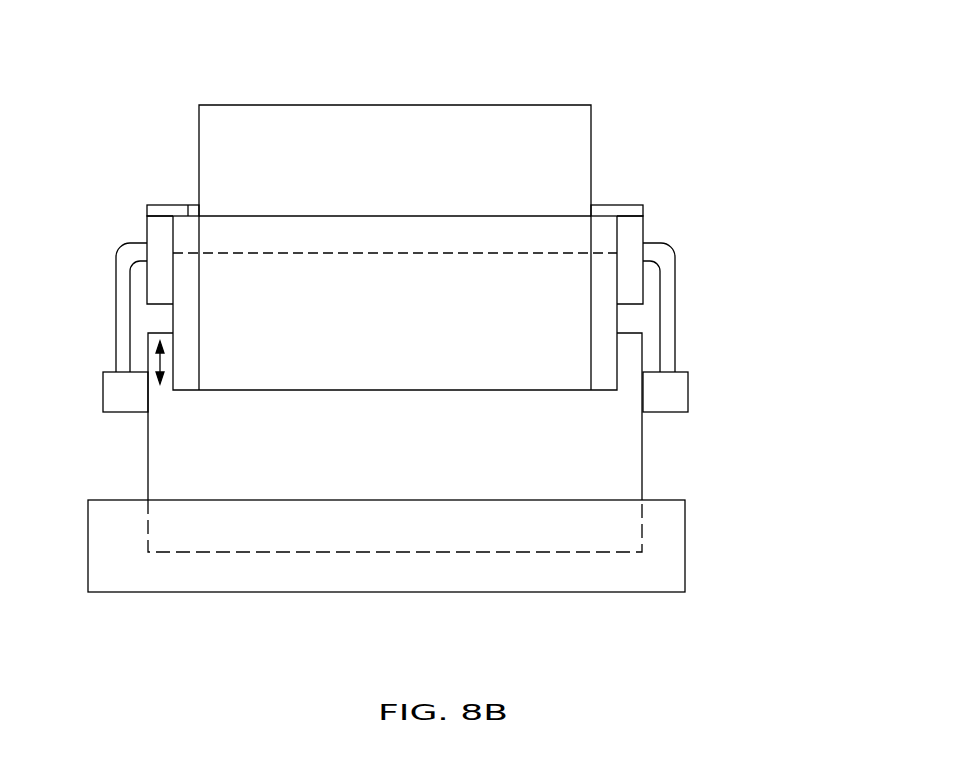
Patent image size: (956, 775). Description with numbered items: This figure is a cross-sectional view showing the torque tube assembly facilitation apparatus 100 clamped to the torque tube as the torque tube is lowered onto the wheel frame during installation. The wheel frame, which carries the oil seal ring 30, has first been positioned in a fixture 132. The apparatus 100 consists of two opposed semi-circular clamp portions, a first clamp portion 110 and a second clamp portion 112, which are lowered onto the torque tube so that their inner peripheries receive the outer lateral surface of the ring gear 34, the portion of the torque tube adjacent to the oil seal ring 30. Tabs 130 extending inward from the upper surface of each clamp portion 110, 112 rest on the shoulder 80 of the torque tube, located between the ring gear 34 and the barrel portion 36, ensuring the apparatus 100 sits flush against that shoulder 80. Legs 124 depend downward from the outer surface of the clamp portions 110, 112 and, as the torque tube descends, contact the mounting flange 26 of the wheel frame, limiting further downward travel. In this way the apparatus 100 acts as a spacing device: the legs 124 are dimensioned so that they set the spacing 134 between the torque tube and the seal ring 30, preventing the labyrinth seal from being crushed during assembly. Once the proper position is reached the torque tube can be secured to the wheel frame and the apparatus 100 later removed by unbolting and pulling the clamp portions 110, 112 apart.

The mounting flange 26 is at (112, 393).
The oil seal ring 30 is at (632, 345).
The ring gear 34 is at (605, 372).
The barrel portion 36 is at (572, 142).
The shoulder 80 is at (188, 215).
The apparatus 100 is at (650, 185).
The first clamp portion 110 is at (632, 233).
The second clamp portion 112 is at (155, 233).
The legs 124 is at (118, 288).
The tabs 130 is at (162, 210).
The fixture 132 is at (652, 582).
The spacing 134 is at (152, 362).